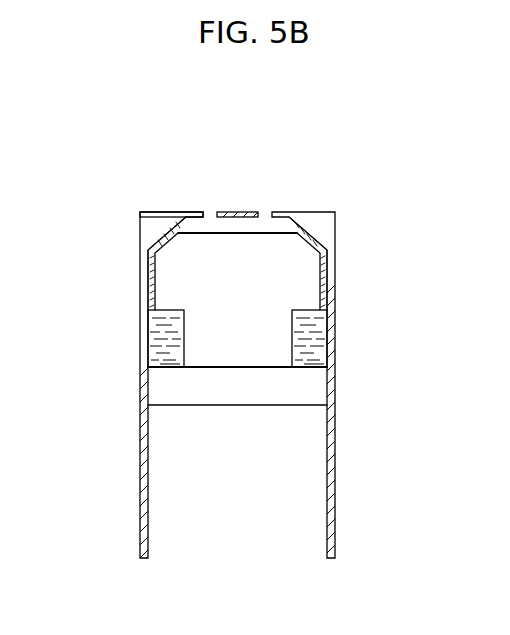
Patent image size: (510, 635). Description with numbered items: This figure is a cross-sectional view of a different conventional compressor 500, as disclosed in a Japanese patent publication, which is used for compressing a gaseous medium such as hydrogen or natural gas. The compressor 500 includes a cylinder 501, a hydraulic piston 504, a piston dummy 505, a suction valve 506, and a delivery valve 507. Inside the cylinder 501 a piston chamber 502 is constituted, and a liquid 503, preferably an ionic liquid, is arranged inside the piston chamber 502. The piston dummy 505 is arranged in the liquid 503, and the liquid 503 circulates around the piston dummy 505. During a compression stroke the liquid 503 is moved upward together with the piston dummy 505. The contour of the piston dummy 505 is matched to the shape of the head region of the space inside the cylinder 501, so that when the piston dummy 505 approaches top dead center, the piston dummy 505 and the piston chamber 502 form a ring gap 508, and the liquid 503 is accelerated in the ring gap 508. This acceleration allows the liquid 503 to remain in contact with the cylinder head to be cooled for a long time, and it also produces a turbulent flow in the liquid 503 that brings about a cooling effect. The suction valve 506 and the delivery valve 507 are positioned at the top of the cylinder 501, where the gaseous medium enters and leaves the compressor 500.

The compressor 500 is at (328, 146).
The cylinder 501 is at (143, 385).
The piston chamber 502 is at (280, 226).
The liquid 503 is at (318, 335).
The hydraulic piston 504 is at (310, 390).
The piston dummy 505 is at (180, 288).
The suction valve 506 is at (212, 212).
The delivery valve 507 is at (265, 212).
The ring gap 508 is at (188, 212).